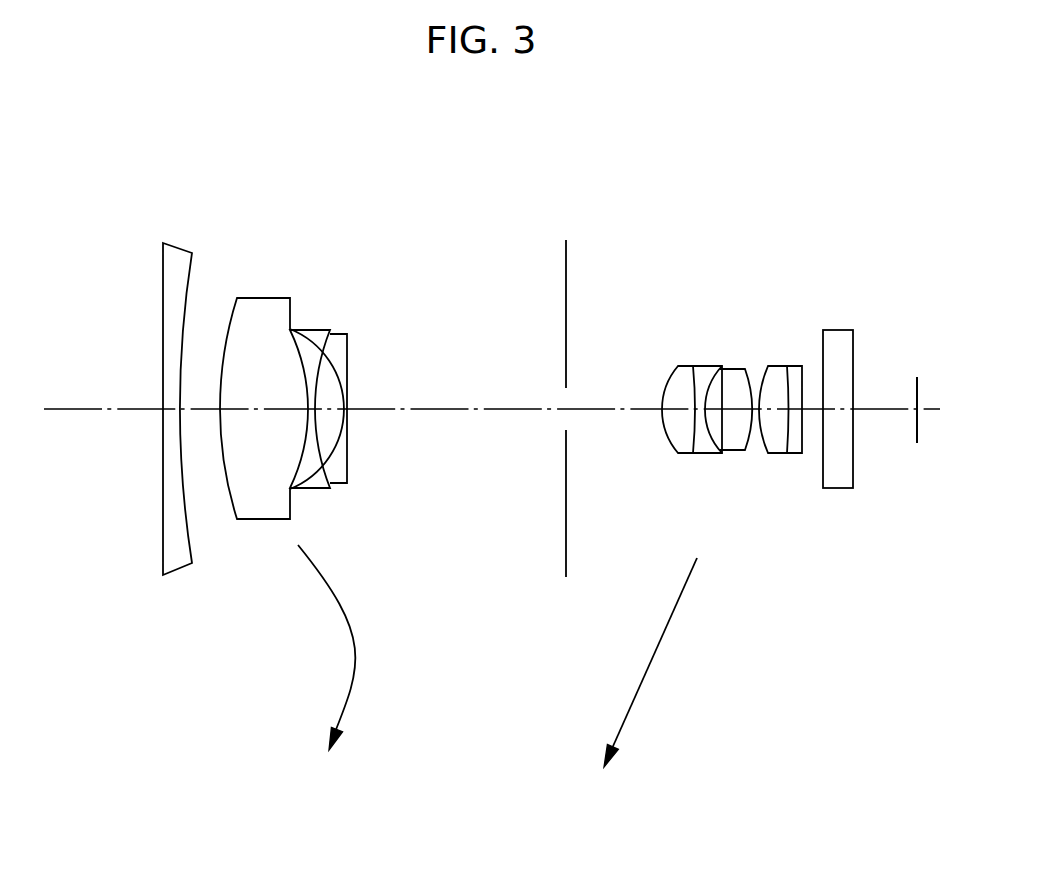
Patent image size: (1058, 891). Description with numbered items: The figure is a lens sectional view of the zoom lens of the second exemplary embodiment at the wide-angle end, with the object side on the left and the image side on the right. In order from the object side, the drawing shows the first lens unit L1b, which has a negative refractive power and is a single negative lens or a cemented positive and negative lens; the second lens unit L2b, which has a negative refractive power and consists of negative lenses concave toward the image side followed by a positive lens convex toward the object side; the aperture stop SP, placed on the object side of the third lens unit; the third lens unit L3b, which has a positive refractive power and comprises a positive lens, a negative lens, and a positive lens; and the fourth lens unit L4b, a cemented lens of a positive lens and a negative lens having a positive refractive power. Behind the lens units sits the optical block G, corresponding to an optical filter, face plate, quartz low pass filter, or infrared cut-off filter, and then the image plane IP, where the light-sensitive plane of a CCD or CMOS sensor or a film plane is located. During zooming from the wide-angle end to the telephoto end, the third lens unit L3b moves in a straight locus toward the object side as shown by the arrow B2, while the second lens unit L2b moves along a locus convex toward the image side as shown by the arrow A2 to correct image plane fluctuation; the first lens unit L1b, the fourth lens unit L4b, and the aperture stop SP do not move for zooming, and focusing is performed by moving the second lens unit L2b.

The first lens unit L1b is at (158, 202).
The second lens unit L2b is at (216, 202).
The third lens unit L3b is at (657, 202).
The fourth lens unit L4b is at (757, 202).
The optical block G is at (818, 202).
The aperture stop SP is at (563, 275).
The image plane IP is at (918, 392).
The movement locus of second lens unit A2 is at (345, 647).
The movement locus of third lens unit B2 is at (650, 662).